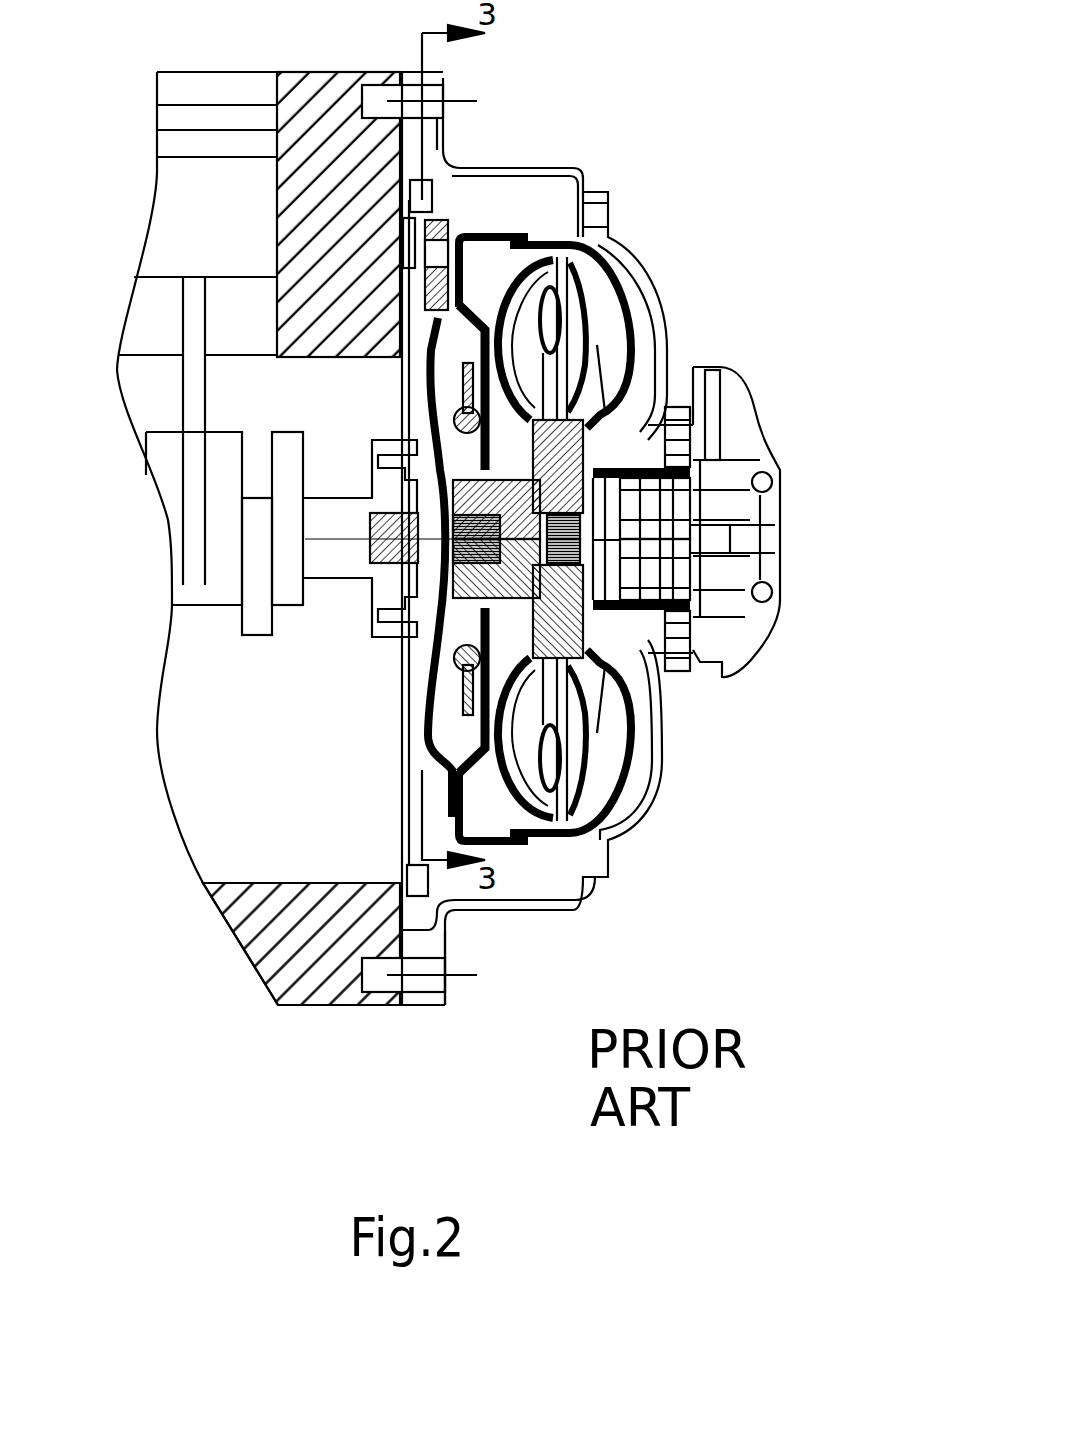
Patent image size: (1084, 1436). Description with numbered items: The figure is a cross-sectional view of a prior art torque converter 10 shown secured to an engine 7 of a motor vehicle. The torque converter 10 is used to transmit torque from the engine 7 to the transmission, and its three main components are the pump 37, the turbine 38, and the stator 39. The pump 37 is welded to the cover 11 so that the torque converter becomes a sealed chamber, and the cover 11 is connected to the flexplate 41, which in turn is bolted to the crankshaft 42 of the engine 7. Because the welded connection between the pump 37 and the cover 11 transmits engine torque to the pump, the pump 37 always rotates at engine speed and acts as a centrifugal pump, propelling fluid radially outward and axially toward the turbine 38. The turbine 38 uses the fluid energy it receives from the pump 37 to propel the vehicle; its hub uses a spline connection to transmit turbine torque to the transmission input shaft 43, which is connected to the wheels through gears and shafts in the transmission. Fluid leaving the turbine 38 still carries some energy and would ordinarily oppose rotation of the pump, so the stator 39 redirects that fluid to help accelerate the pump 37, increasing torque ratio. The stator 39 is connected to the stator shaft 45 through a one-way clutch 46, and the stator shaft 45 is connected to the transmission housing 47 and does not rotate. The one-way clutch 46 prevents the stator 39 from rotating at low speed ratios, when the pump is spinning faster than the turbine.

The engine 7 is at (422, 917).
The torque converter 10 is at (639, 277).
The cover 11 is at (425, 387).
The pump 37 is at (641, 799).
The turbine 38 is at (485, 799).
The stator 39 is at (511, 708).
The flexplate 41 is at (408, 686).
The crankshaft 42 is at (349, 605).
The transmission input shaft 43 is at (718, 557).
The stator shaft 45 is at (710, 478).
The one-way clutch 46 is at (616, 651).
The transmission housing 47 is at (722, 385).